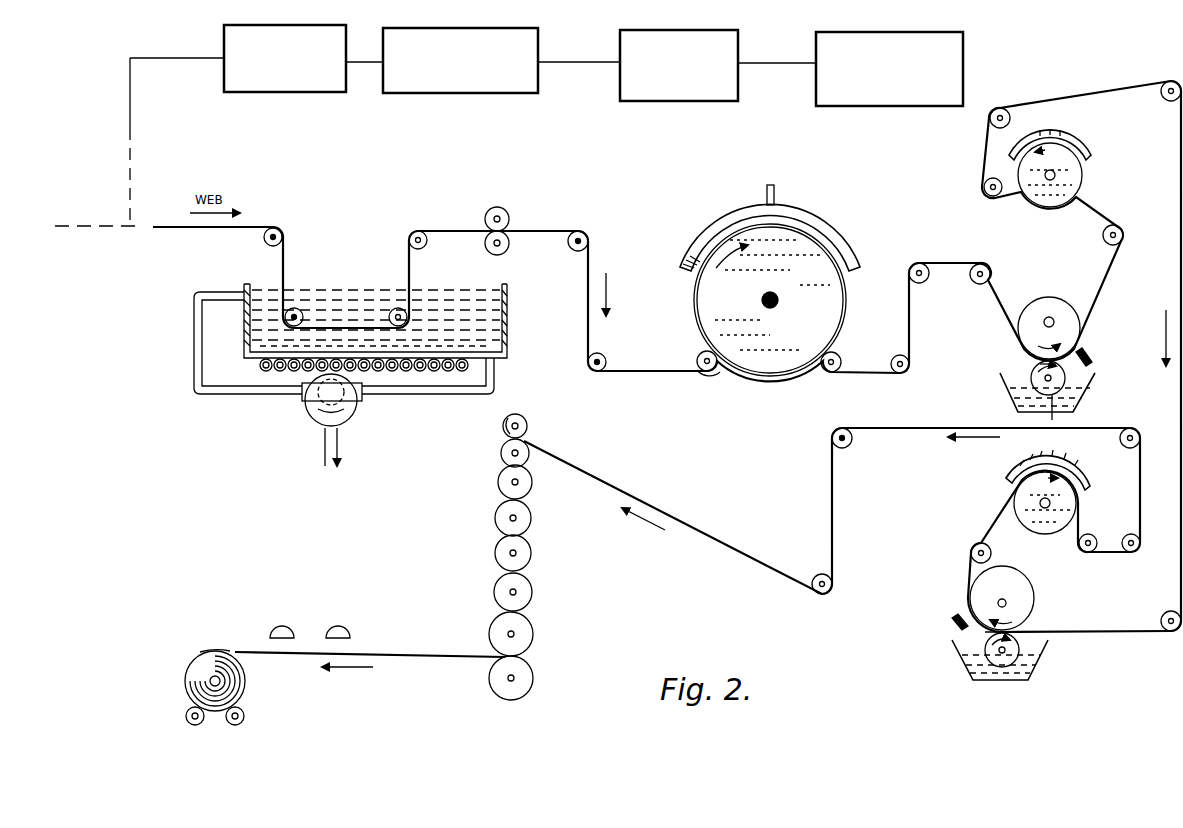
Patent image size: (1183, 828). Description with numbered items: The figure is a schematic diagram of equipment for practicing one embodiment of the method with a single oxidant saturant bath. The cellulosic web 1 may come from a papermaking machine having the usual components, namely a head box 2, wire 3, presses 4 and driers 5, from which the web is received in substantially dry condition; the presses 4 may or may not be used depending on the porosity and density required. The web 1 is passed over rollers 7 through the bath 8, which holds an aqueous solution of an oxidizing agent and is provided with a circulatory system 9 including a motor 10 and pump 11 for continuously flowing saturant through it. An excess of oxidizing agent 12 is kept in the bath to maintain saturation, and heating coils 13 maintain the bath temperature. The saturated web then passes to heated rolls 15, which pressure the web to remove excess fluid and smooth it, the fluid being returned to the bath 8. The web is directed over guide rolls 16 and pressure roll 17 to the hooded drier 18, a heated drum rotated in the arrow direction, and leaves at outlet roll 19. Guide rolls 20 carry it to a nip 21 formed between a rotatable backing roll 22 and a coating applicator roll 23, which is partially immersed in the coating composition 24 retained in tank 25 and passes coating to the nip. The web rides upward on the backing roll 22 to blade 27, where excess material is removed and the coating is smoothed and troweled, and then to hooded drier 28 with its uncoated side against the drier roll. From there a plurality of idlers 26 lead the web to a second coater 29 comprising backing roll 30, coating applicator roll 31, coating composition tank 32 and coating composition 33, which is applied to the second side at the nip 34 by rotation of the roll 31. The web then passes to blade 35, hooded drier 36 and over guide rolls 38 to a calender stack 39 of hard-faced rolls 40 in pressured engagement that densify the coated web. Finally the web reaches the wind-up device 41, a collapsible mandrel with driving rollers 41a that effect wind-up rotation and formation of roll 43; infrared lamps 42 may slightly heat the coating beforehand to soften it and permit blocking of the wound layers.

The cellulosic web 1 is at (268, 227).
The head box 2 is at (888, 106).
The wire 3 is at (700, 101).
The presses 4 is at (505, 93).
The driers 5 is at (310, 92).
The rollers 7 is at (264, 240).
The bath 8 is at (507, 338).
The circulatory system 9 is at (194, 355).
The motor 10 is at (315, 417).
The pump 11 is at (350, 408).
The excess of oxidizing agent 12 is at (415, 350).
The heating coils 13 is at (418, 372).
The heated rolls 15 is at (507, 215).
The guide rolls 16 is at (588, 240).
The pressure roll 17 is at (705, 372).
The hooded drier 18 is at (770, 280).
The outlet roll 19 is at (834, 372).
The guide rolls 20 is at (912, 266).
The nip 21 is at (1032, 365).
The backing roll 22 is at (1049, 318).
The coating applicator roll 23 is at (1068, 410).
The coating composition 24 is at (1066, 384).
The tank 25 is at (1076, 396).
The idlers 26 is at (1005, 110).
The blade 27 is at (1086, 357).
The hooded drier 28 is at (1050, 168).
The second coater 29 is at (1076, 664).
The backing roll 30 is at (970, 598).
The coating applicator roll 31 is at (1000, 666).
The coating composition tank 32 is at (1033, 676).
The coating composition 33 is at (962, 664).
The nip 34 is at (975, 634).
The blade 35 is at (952, 621).
The hooded drier 36 is at (1030, 524).
The guide rolls 38 is at (850, 445).
The calender stack 39 is at (578, 610).
The hard-faced rolls 40 is at (530, 552).
The wind-up device 41 is at (225, 683).
The driving rollers 41a is at (190, 726).
The infrared lamps 42 is at (283, 628).
The roll 43 is at (200, 656).